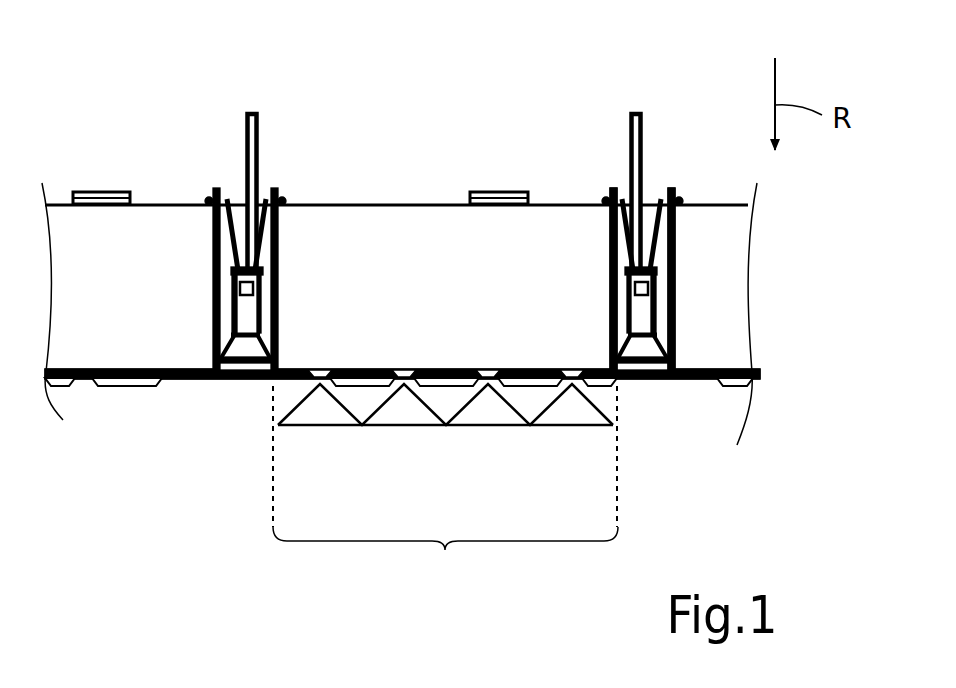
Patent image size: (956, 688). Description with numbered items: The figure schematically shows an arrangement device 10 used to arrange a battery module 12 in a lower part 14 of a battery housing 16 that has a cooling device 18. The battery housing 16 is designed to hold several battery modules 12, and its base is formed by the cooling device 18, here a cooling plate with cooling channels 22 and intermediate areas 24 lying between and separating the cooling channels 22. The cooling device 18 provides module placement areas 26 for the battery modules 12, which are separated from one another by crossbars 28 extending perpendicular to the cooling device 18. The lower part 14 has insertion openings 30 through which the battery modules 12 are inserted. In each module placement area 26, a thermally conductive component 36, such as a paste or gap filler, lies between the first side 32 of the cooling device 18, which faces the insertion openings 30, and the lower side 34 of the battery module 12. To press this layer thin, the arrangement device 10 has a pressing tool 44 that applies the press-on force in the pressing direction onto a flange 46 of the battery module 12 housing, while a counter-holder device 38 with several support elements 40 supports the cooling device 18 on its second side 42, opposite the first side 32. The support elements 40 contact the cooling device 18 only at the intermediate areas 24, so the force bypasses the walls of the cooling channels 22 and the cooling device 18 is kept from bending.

The arrangement device 10 is at (196, 457).
The battery module 12 is at (151, 224).
The lower part 14 is at (605, 184).
The battery housing 16 is at (605, 184).
The cooling device 18 is at (676, 395).
The cooling channels 22 is at (48, 386).
The intermediate areas 24 is at (308, 368).
The module placement areas 26 is at (445, 483).
The crossbars 28 is at (238, 300).
The insertion openings 30 is at (96, 176).
The first side 32 is at (183, 369).
The lower side 34 is at (60, 369).
The thermally conductive component 36 is at (452, 369).
The counter-holder device 38 is at (584, 442).
The support elements 40 is at (320, 432).
The second side 42 is at (250, 384).
The pressing tool 44 is at (252, 112).
The flange 46 is at (233, 272).